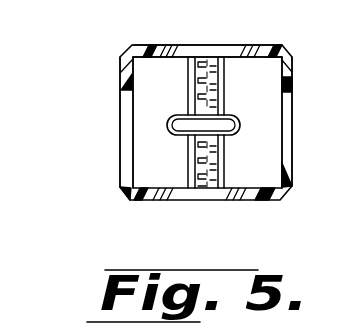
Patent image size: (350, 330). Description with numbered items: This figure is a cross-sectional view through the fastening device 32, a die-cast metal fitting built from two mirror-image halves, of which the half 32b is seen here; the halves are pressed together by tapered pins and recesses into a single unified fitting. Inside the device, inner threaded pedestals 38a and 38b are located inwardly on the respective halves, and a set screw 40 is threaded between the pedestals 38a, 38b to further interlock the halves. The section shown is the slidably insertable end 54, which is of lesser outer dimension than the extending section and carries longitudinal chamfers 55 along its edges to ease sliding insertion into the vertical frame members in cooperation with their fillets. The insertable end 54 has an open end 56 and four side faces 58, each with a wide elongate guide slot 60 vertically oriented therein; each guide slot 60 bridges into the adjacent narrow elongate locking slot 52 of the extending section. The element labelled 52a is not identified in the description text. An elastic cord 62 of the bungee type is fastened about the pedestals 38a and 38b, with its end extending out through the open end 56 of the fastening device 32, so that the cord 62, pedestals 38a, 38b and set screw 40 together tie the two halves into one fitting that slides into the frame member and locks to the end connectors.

The fastening device 32 is at (291, 94).
The mirror-image half 32b is at (255, 204).
The inner threaded pedestal 38a is at (187, 73).
The inner threaded pedestal 38b is at (183, 172).
The set screw 40 is at (201, 200).
The locking slot 52 is at (295, 102).
The top rail 52a is at (275, 43).
The slidably insertable end 54 is at (292, 163).
The longitudinal chamfer 55 is at (128, 54).
The open end 56 is at (147, 103).
The side face 58 is at (243, 48).
The guide slot 60 is at (203, 48).
The elastic cord 62 is at (240, 124).